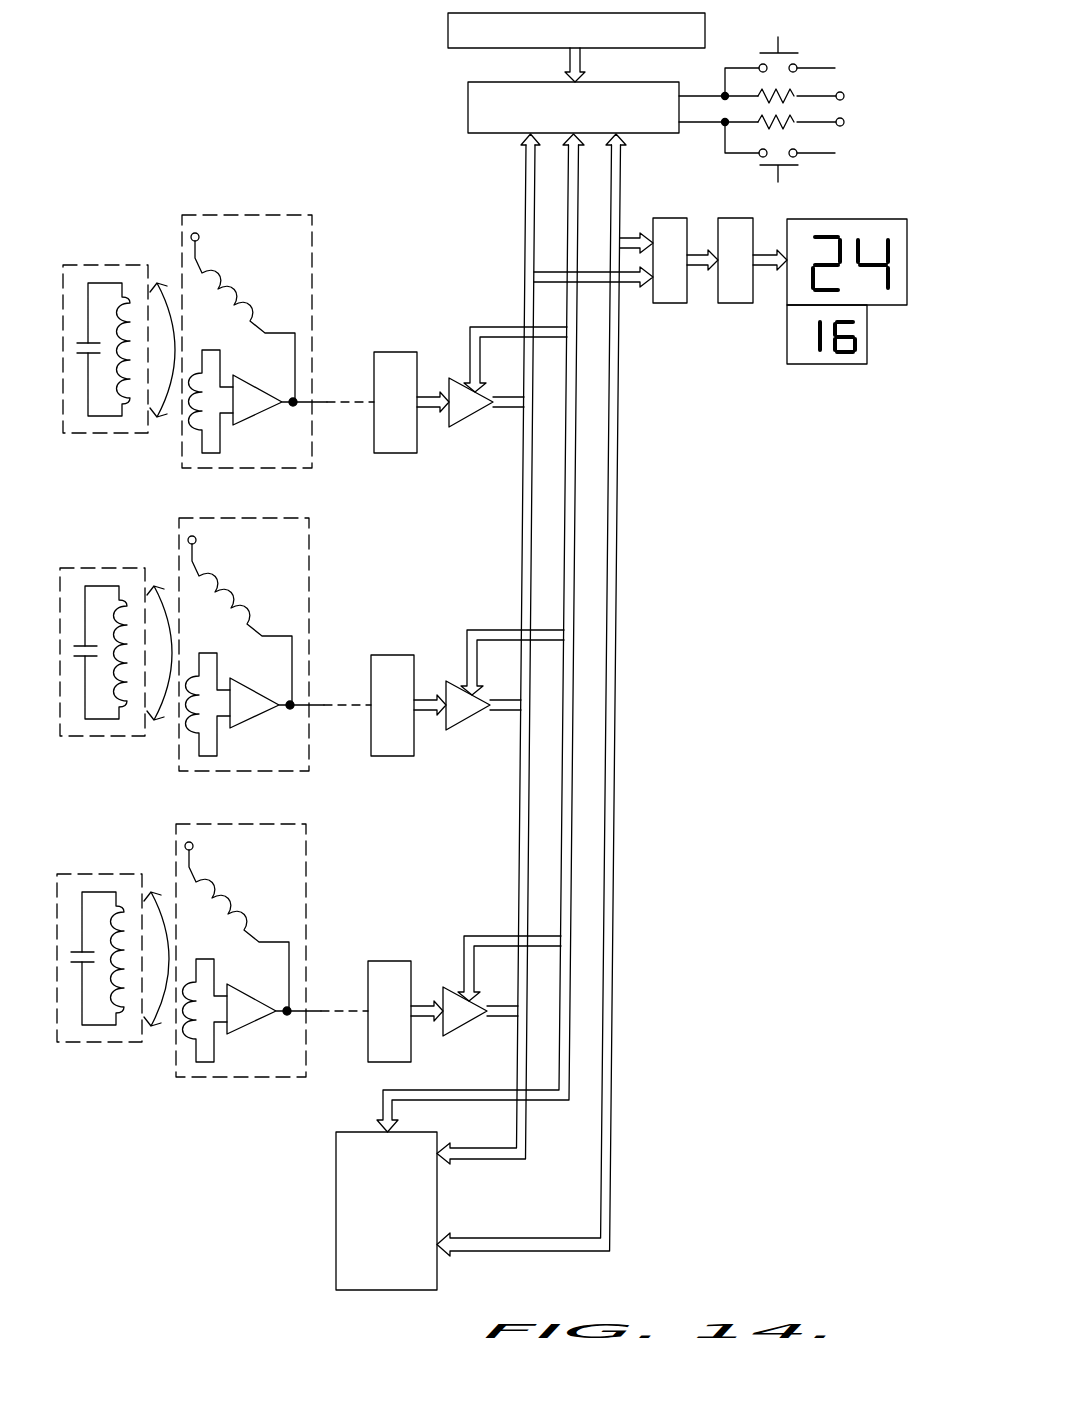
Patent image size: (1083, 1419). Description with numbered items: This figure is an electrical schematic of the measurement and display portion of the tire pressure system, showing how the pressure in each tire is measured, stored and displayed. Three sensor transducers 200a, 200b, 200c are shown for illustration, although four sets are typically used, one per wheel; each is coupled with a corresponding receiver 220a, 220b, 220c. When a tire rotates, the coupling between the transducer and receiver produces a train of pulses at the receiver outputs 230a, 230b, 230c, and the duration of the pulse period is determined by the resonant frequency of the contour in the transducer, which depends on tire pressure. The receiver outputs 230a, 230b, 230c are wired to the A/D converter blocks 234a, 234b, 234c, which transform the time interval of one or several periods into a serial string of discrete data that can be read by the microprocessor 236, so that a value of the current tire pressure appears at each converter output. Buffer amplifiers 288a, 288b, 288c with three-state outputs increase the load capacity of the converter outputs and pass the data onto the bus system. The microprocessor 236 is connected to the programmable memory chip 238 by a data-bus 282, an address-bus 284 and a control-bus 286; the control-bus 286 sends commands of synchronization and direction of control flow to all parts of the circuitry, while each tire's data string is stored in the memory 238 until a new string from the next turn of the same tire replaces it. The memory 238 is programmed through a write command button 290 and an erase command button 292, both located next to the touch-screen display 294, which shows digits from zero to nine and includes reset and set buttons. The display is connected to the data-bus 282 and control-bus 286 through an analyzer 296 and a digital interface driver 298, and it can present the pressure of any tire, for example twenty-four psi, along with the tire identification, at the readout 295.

The touch-screen display 294 is at (448, 28).
The microprocessor 236 is at (468, 117).
The write command button 290 is at (780, 45).
The erase command button 292 is at (778, 182).
The analyzer 296 is at (665, 303).
The digital interface driver 298 is at (735, 303).
The tire pressure display 295 is at (893, 305).
The address-bus 284 is at (615, 877).
The control-bus 286 is at (570, 1073).
The data-bus 282 is at (500, 1159).
The memory chip 238 is at (336, 1223).
The sensor transducer 200a is at (80, 265).
The sensor transducer 200b is at (116, 621).
The sensor transducer 200c is at (113, 927).
The receiver 220a is at (240, 215).
The receiver 220b is at (308, 562).
The receiver 220c is at (305, 866).
The receiver output 230a is at (333, 405).
The receiver output 230b is at (353, 752).
The receiver output 230c is at (328, 1014).
The A/D converter block 234a is at (393, 352).
The A/D converter block 234b is at (408, 676).
The A/D converter block 234c is at (368, 970).
The buffer amplifier 288a is at (467, 417).
The buffer amplifier 288b is at (505, 709).
The buffer amplifier 288c is at (443, 987).